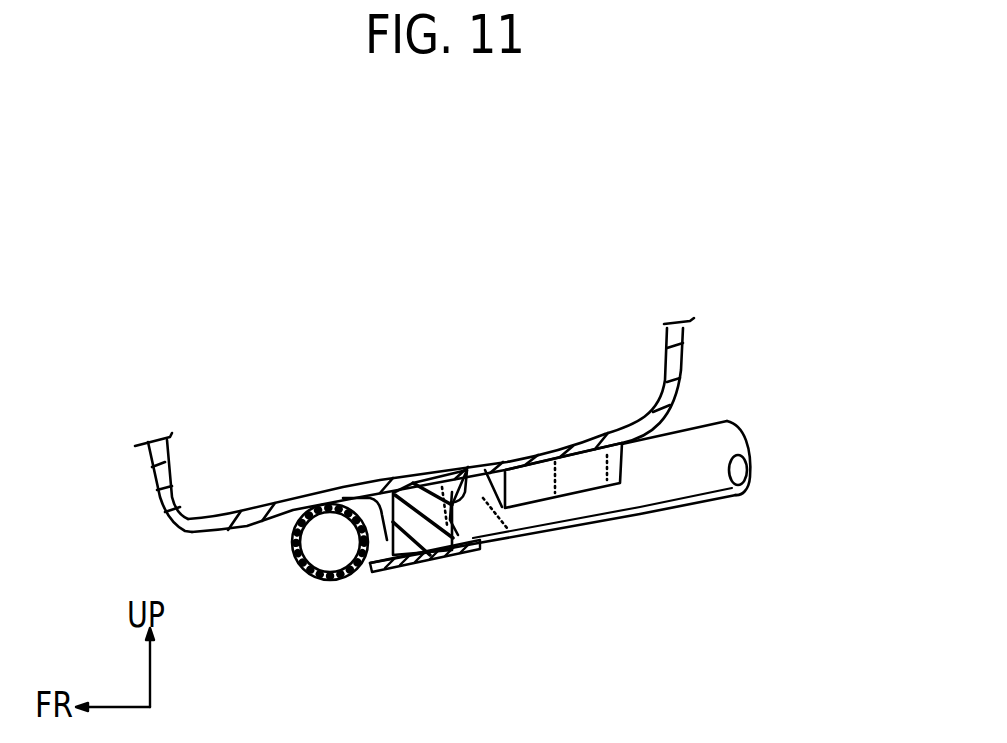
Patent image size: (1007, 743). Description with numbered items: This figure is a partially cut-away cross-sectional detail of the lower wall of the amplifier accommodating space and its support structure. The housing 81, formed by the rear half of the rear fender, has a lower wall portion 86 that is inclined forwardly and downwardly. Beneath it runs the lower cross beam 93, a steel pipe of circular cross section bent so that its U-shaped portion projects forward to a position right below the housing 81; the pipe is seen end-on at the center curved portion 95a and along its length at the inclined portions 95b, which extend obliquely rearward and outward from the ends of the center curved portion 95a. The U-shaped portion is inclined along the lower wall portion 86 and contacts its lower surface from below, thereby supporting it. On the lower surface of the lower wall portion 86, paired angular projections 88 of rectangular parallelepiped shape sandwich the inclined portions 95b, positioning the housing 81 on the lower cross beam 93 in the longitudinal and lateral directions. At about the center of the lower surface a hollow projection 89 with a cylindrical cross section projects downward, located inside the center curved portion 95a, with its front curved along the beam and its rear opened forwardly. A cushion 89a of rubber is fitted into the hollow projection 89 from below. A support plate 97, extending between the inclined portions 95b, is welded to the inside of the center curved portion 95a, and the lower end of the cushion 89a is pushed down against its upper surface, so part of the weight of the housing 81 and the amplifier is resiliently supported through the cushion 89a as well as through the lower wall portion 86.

The housing 81 is at (688, 366).
The lower wall portion 86 is at (245, 527).
The angular projections 88 is at (577, 483).
The hollow projection 89 is at (480, 502).
The cushion 89a is at (430, 545).
The lower cross beam 93 is at (728, 510).
The center curved portion 95a is at (323, 582).
The inclined portions 95b is at (660, 502).
The support plate 97 is at (473, 557).